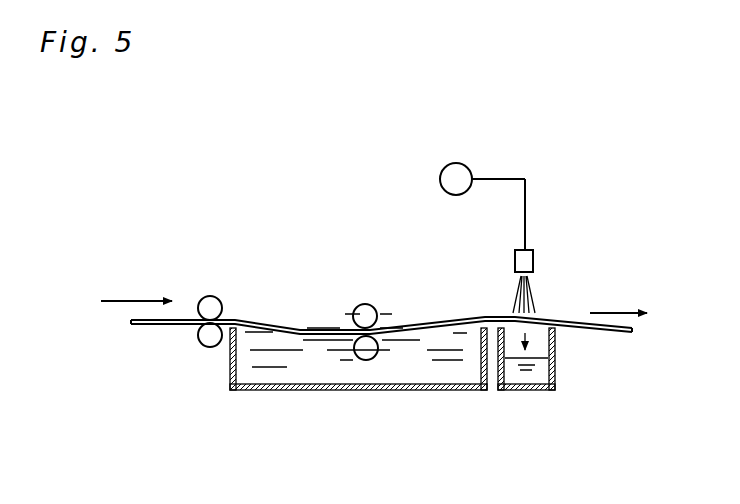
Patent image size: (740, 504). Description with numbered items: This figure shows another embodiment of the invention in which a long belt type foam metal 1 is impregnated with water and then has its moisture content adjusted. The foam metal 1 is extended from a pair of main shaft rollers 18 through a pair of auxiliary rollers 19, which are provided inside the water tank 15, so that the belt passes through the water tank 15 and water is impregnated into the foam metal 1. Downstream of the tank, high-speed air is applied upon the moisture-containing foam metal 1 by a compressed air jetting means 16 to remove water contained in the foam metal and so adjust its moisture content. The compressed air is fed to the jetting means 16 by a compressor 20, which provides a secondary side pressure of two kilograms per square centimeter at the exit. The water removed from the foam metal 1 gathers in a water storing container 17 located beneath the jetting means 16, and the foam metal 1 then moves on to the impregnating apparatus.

The foam metal 1 is at (143, 327).
The water tank 15 is at (270, 390).
The compressed air jetting means 16 is at (533, 256).
The water storing container 17 is at (525, 390).
The main shaft rollers 18 is at (210, 302).
The auxiliary rollers 19 is at (366, 306).
The compressor 20 is at (458, 163).